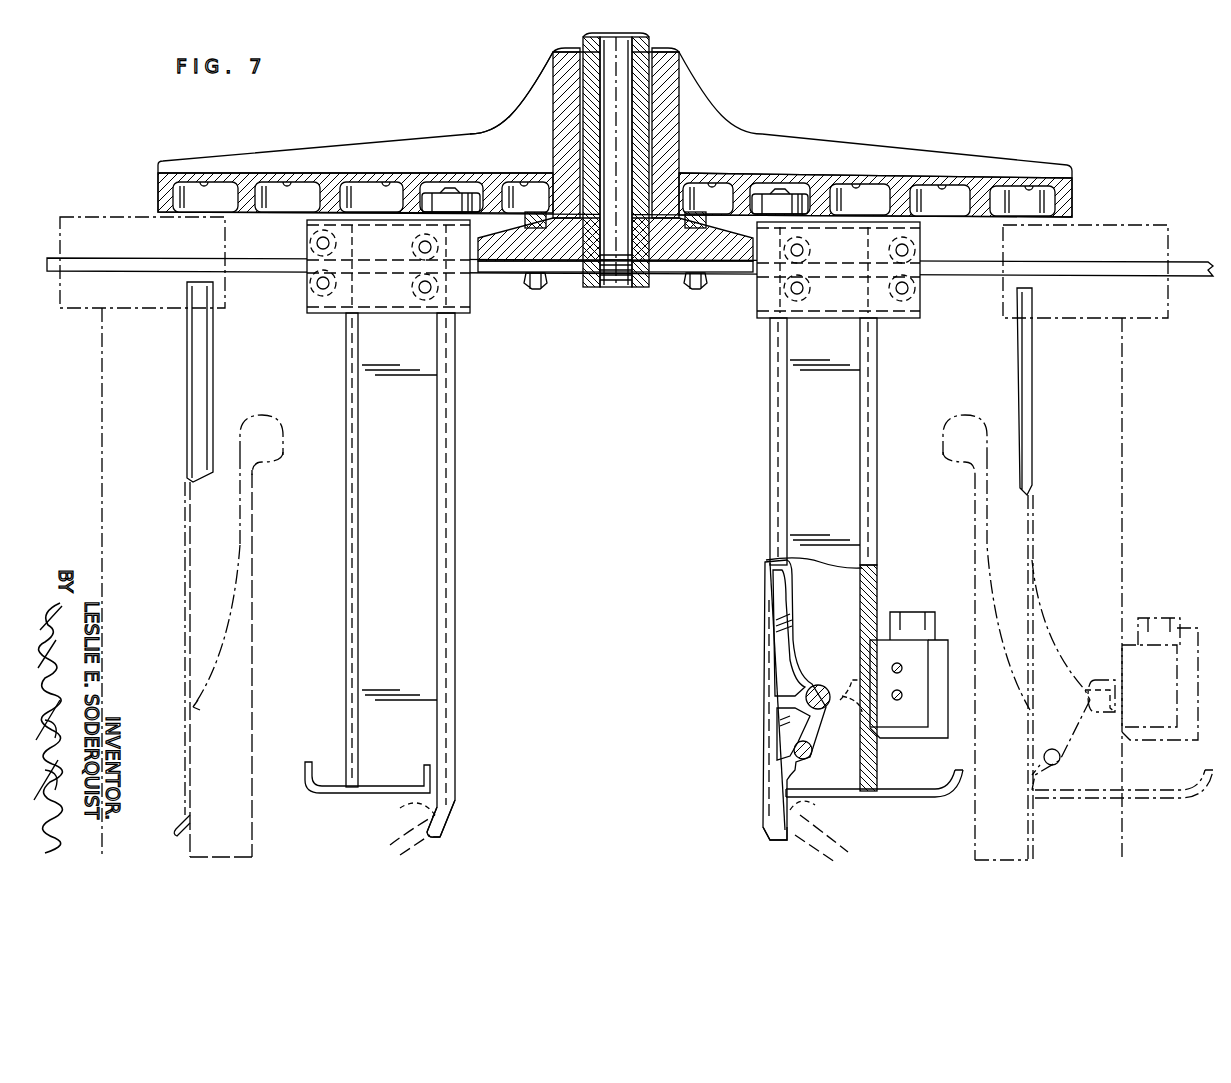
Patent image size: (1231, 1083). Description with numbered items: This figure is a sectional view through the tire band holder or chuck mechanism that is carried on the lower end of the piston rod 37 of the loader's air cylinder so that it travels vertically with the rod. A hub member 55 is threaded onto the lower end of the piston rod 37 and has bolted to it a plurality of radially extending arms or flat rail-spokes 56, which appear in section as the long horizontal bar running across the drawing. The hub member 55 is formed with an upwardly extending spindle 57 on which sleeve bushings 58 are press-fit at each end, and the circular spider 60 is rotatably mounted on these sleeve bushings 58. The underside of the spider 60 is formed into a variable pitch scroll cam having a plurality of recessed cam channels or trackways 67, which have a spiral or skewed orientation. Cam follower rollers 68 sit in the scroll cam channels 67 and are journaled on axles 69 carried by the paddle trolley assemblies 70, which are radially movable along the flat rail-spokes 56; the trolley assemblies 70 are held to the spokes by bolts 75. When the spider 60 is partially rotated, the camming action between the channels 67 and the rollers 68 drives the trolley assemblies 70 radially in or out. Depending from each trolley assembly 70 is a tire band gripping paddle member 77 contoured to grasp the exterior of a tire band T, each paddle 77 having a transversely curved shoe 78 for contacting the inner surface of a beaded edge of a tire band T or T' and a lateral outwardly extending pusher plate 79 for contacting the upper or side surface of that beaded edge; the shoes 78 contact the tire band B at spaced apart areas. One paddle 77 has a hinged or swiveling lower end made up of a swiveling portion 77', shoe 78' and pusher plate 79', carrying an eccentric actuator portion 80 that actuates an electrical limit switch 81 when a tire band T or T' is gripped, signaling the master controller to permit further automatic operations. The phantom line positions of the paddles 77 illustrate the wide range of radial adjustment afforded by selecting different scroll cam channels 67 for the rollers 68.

The piston rod 37 is at (640, 125).
The hub member 55 is at (570, 268).
The arms or flat rail-spokes 56 is at (268, 262).
The spindle 57 is at (575, 130).
The sleeve bushings 58 is at (649, 42).
The circular spider 60 is at (316, 130).
The scroll cam channels or trackways 67 is at (200, 181).
The cam follower rollers 68 is at (435, 192).
The axles 69 is at (545, 212).
The paddle trolley assemblies 70 is at (91, 318).
The clamp bolts 75 is at (310, 245).
The tire band gripping paddle member 77 is at (639, 571).
The hinged or swiveling lower end of paddle 77' is at (910, 700).
The transversely curved segment or shoe 78 is at (466, 824).
The shoe of swiveling paddle end 78' is at (753, 844).
The pusher plate 79 is at (360, 791).
The pusher plate of swiveling paddle end 79' is at (999, 807).
The eccentric actuator portion 80 is at (828, 710).
The electrical limit switch 81 is at (928, 735).
The tire band T is at (611, 637).
The tire band T' is at (609, 840).
The tire band B is at (400, 808).